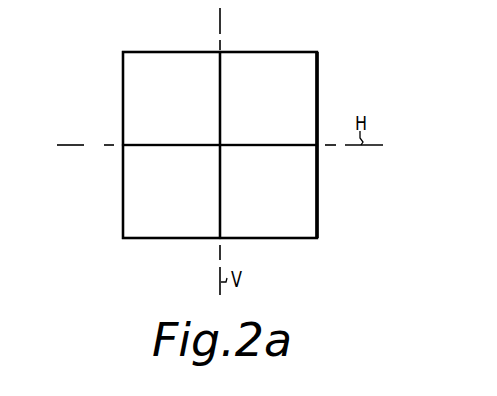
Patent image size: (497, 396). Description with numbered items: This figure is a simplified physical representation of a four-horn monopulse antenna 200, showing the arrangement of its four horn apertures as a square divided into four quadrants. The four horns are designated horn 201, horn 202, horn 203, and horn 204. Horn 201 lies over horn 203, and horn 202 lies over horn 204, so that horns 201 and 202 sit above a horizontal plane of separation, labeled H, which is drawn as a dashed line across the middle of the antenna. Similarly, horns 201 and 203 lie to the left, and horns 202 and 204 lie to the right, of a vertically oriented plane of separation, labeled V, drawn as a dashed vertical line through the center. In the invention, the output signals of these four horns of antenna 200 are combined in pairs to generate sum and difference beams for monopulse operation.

The four-horn monopulse antenna 200 is at (383, 275).
The horn 201 is at (189, 118).
The horn 202 is at (292, 118).
The horn 203 is at (192, 207).
The horn 204 is at (290, 207).